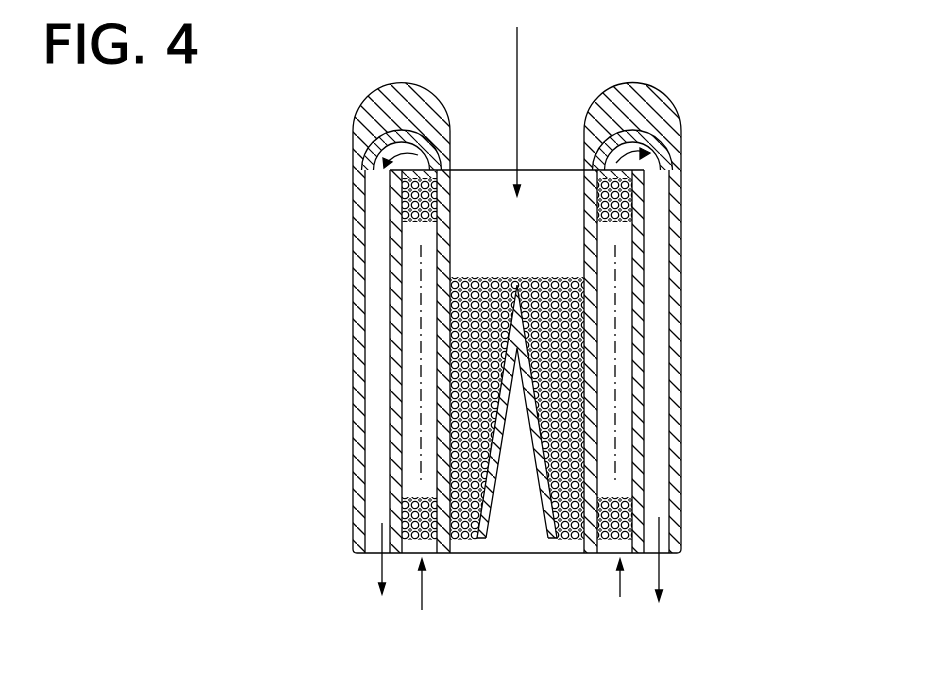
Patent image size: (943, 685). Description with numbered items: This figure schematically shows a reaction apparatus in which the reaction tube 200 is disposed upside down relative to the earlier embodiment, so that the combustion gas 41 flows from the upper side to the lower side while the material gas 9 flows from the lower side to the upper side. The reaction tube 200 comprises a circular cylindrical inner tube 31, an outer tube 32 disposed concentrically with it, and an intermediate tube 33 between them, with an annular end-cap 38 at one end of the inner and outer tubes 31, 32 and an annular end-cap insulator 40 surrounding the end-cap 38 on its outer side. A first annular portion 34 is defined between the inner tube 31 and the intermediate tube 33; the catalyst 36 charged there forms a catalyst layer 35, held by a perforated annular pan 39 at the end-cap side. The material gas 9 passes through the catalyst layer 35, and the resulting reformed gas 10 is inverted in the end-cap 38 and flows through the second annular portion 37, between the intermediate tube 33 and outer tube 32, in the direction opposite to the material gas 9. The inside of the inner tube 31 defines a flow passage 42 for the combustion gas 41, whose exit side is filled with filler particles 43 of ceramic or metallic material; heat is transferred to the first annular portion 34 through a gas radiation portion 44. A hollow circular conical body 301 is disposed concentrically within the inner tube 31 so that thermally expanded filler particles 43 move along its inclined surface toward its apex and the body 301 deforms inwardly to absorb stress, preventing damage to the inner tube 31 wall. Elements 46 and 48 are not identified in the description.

The reaction tube 200 is at (350, 292).
The annular end-cap insulator 40 is at (360, 124).
The annular end-cap 38 is at (362, 165).
The annular pan 39 is at (382, 178).
The flow passage 42 is at (487, 238).
The combustion gas 41 is at (516, 54).
The second annular portion 37 is at (377, 325).
The intermediate tube 33 is at (394, 370).
The outer tube 32 is at (360, 417).
The inner tube 31 is at (440, 440).
The catalyst 36 is at (400, 488).
The catalyst layer 35 is at (408, 515).
The first annular portion 34 is at (406, 557).
The filler particles 43 is at (481, 556).
The circular conical body 301 is at (543, 517).
The catalyst particles 48 is at (575, 362).
The outer tube 46 is at (582, 418).
The gas radiation portion 44 is at (560, 243).
The reformed gas 10 is at (380, 107).
The material gas 9 is at (423, 583).